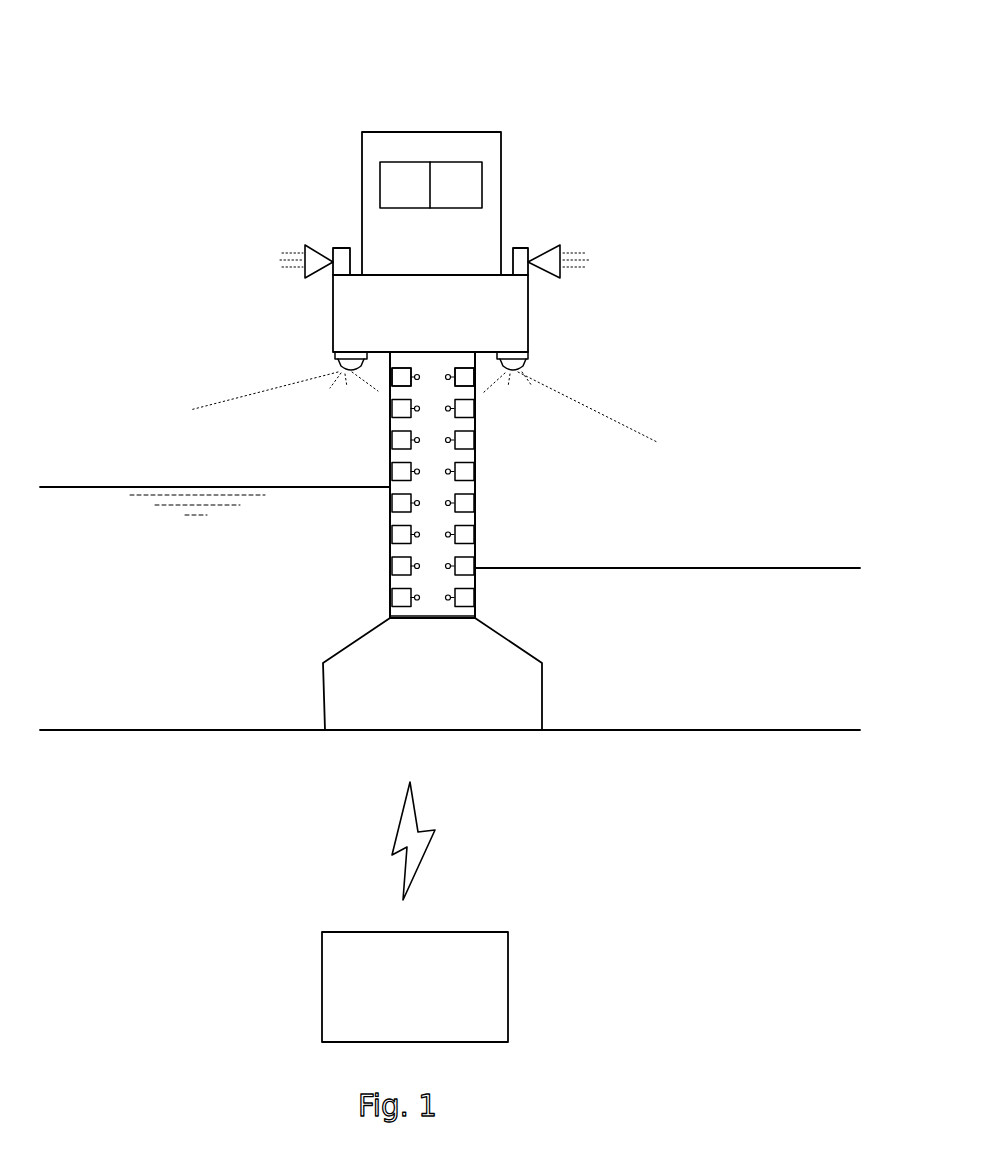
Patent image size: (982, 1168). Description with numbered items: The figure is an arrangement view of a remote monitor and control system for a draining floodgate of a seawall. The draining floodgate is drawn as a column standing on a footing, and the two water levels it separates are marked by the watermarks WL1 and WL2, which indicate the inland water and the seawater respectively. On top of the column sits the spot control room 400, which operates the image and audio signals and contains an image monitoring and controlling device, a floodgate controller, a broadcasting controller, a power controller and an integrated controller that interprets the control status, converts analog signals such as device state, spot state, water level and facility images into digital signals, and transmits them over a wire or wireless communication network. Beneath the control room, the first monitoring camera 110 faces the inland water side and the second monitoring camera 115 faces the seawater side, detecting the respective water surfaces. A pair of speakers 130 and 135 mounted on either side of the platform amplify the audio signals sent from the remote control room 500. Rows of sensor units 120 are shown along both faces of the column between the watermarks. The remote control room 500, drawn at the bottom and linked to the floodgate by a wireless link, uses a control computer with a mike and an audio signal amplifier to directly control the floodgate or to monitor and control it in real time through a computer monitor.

The spot control room 400 is at (432, 132).
The speaker 130 is at (312, 258).
The speaker 135 is at (557, 243).
The water level sensors 120 is at (417, 377).
The first monitoring camera 110 is at (345, 370).
The second monitoring camera 115 is at (518, 370).
The watermark WL1 is at (396, 538).
The watermark WL2 is at (465, 598).
The remote control room 500 is at (510, 975).